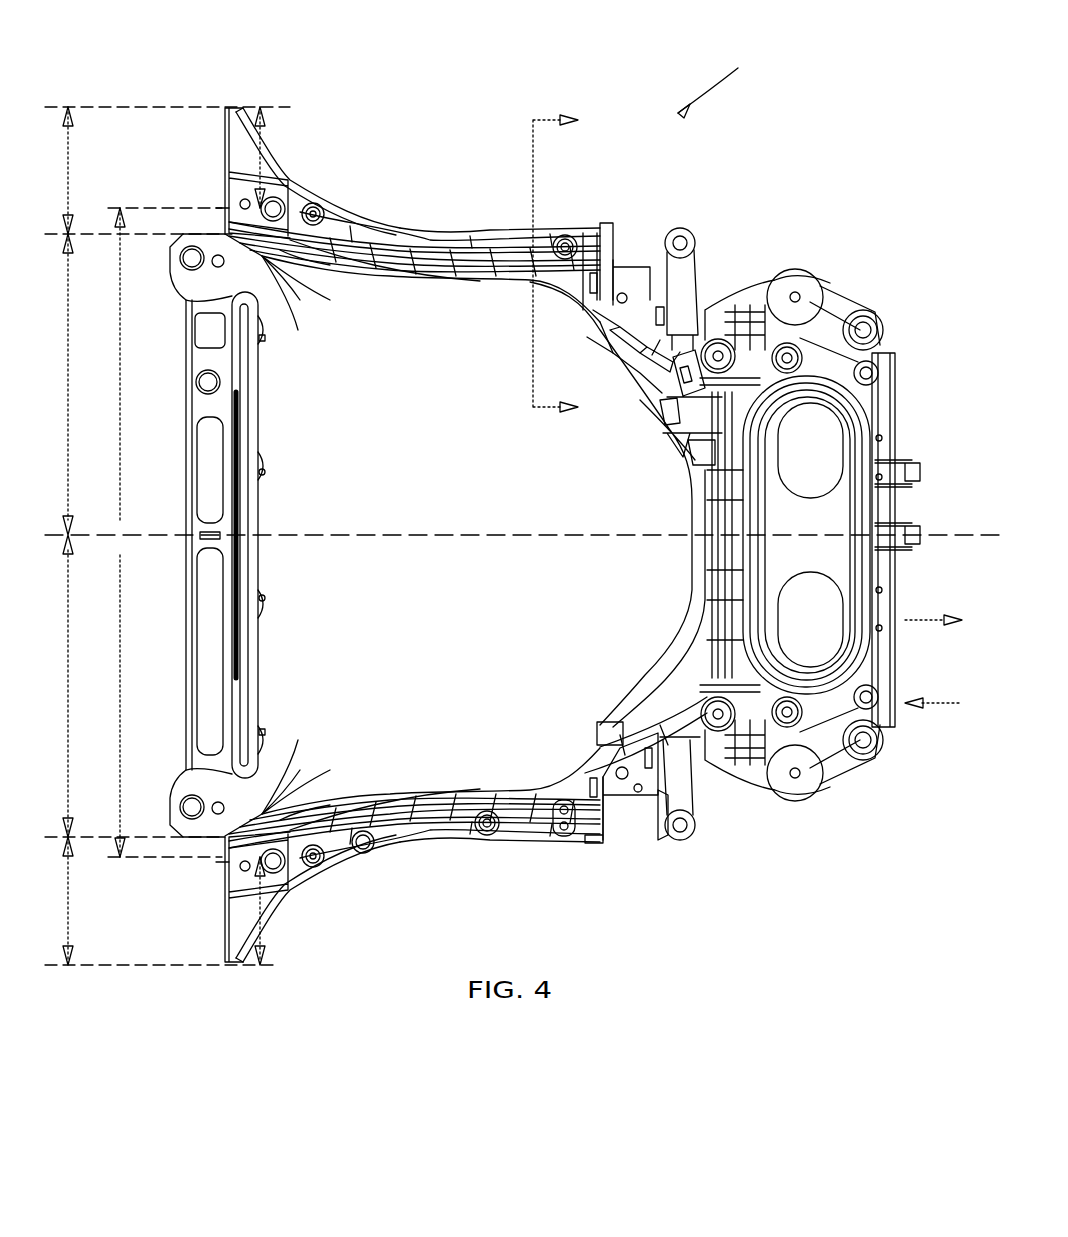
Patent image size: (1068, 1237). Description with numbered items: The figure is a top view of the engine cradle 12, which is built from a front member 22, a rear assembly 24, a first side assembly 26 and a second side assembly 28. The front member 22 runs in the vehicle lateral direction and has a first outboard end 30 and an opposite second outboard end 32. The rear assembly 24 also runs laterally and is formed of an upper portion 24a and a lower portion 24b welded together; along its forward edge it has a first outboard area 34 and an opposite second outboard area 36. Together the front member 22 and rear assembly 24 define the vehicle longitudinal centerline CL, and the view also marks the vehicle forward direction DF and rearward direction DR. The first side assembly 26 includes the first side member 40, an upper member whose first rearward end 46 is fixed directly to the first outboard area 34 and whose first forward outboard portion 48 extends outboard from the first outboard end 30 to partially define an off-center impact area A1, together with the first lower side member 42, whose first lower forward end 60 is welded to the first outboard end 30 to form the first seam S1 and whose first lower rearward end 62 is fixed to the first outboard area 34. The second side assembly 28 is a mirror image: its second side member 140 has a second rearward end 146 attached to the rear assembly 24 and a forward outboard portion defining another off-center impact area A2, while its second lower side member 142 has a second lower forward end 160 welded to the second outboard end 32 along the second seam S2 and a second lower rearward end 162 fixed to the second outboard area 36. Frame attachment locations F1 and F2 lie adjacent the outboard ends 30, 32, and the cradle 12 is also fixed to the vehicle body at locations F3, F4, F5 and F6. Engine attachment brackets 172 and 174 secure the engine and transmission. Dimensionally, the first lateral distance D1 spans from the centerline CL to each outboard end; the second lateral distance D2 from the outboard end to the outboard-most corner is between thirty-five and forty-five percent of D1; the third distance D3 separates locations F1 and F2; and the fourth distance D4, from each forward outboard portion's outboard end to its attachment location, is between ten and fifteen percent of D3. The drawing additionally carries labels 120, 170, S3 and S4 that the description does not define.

The engine cradle 12 is at (643, 227).
The front member 22 is at (176, 494).
The rear assembly 24 is at (884, 522).
The upper portion 24a is at (882, 580).
The lower portion 24b is at (640, 690).
The first side assembly 26 is at (482, 226).
The second side assembly 28 is at (506, 840).
The first outboard end 30 is at (312, 268).
The second outboard end 32 is at (300, 800).
The first outboard area 34 is at (580, 325).
The second outboard area 36 is at (600, 752).
The first side member 40 is at (410, 228).
The first lower side member 42 is at (300, 266).
The first rearward end 46 is at (577, 232).
The first forward outboard portion 48 is at (244, 110).
The first lower forward end 60 is at (213, 303).
The first lower rearward end 62 is at (605, 358).
The first hook 120 is at (696, 238).
The second side member 140 is at (226, 942).
The second lower side member 142 is at (282, 786).
The second rearward end 146 is at (655, 805).
The second lower forward end 160 is at (182, 797).
The second lower rearward end 162 is at (613, 727).
The second hook 170 is at (698, 826).
The engine attachment bracket 172 is at (690, 465).
The engine attachment bracket 174 is at (665, 412).
The off-center impact area A1 is at (240, 107).
The off-center impact area A2 is at (232, 968).
The vehicle longitudinal centerline CL is at (455, 532).
The first lateral distance D1 is at (62, 535).
The second lateral distance D2 is at (167, 536).
The third distance D3 is at (161, 532).
The fourth distance D4 is at (284, 166).
The vehicle rearward direction DR is at (930, 622).
The vehicle forward direction DF is at (930, 705).
The first frame attachment location F1 is at (322, 208).
The second frame attachment location F2 is at (314, 862).
The frame attachment location F3 is at (722, 338).
The frame attachment location F4 is at (800, 800).
The frame attachment location F5 is at (872, 315).
The frame attachment location F6 is at (870, 758).
The first seam S1 is at (272, 262).
The second seam S2 is at (272, 800).
The third surface S3 is at (613, 275).
The fourth surface S4 is at (600, 737).